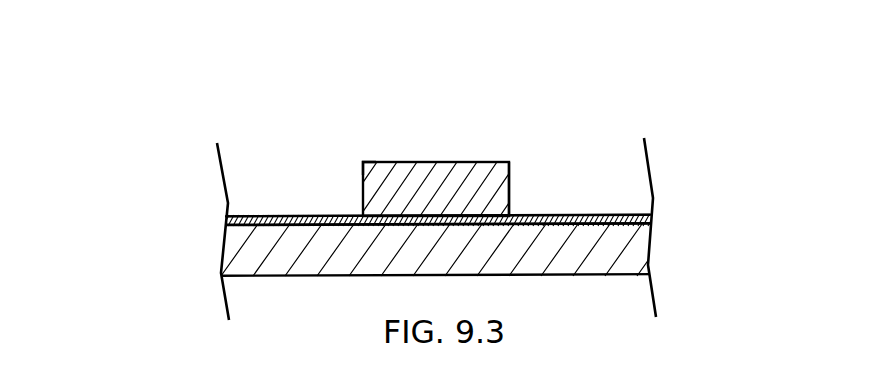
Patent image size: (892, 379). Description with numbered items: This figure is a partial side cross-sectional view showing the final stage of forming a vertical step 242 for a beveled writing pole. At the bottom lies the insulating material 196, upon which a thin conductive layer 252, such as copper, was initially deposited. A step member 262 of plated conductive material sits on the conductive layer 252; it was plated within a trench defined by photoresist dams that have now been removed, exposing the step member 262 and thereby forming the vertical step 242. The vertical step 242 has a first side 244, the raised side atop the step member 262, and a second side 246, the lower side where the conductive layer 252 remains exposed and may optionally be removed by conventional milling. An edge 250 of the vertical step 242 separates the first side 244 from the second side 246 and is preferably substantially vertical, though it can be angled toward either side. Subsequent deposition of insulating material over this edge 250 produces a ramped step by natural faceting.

The insulating material 196 is at (638, 257).
The vertical step 242 is at (478, 140).
The first side 244 is at (428, 163).
The second side 246 is at (632, 210).
The edge 250 is at (509, 198).
The conductive layer 252 is at (652, 217).
The step member 262 is at (362, 163).